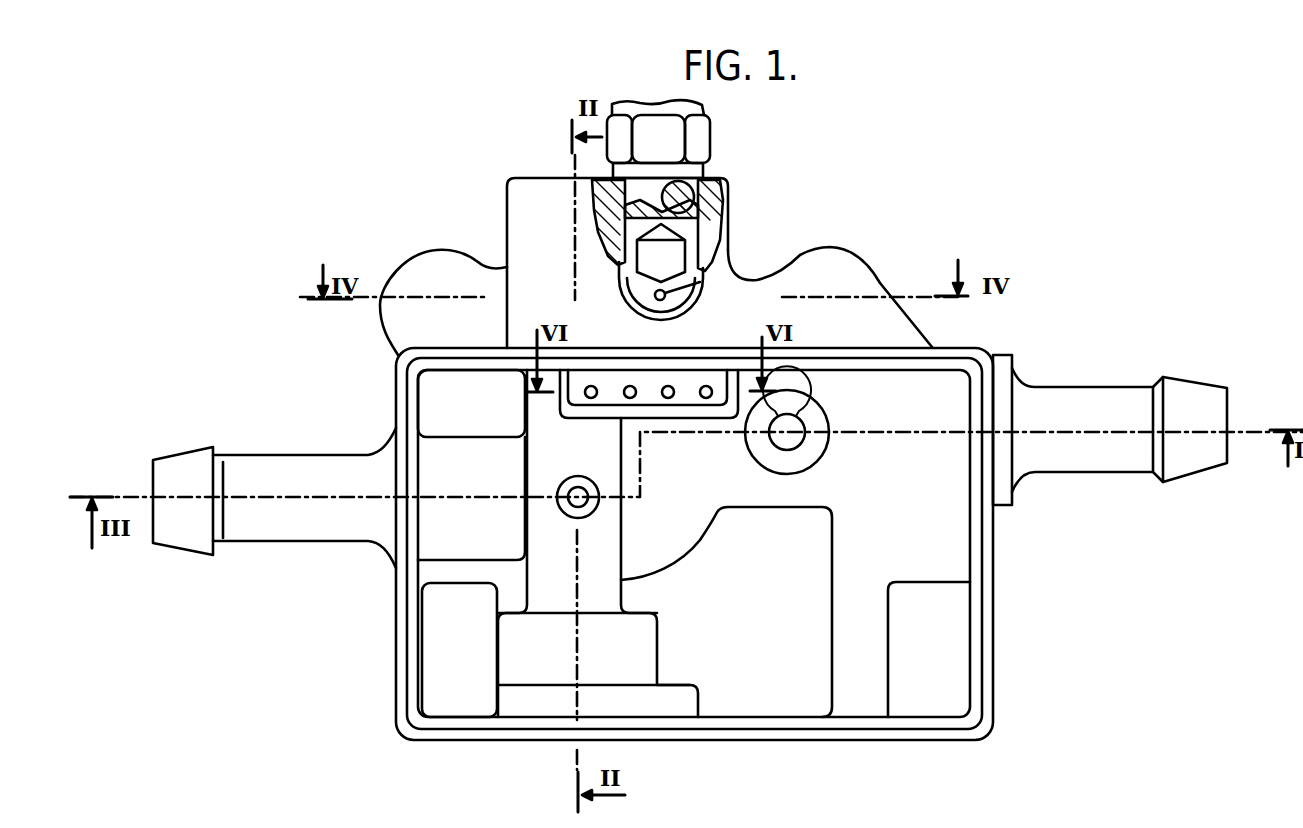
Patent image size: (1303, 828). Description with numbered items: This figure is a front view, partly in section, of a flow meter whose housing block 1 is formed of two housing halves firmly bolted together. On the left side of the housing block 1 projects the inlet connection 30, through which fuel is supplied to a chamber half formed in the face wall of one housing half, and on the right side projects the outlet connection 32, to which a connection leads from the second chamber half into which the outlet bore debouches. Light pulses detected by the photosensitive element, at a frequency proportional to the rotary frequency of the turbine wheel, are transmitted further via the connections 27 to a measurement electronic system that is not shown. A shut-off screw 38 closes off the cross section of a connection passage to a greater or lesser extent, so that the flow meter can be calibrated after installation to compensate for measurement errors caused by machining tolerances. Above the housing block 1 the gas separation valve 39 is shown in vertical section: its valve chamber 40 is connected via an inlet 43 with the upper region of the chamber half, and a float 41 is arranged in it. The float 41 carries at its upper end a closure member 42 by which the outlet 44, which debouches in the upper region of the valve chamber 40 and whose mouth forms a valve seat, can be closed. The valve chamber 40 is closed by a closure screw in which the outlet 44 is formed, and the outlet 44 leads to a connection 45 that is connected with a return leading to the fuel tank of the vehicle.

The housing block 1 is at (983, 552).
The connections 27 is at (706, 386).
The inlet connection 30 is at (300, 473).
The outlet connection 32 is at (1091, 404).
The shut-off screw 38 is at (800, 428).
The gas separation valve 39 is at (686, 257).
The valve chamber 40 is at (718, 226).
The float 41 is at (640, 268).
The closure member 42 is at (697, 201).
The inlet 43 is at (712, 264).
The outlet 44 is at (627, 195).
The connection 45 is at (705, 106).